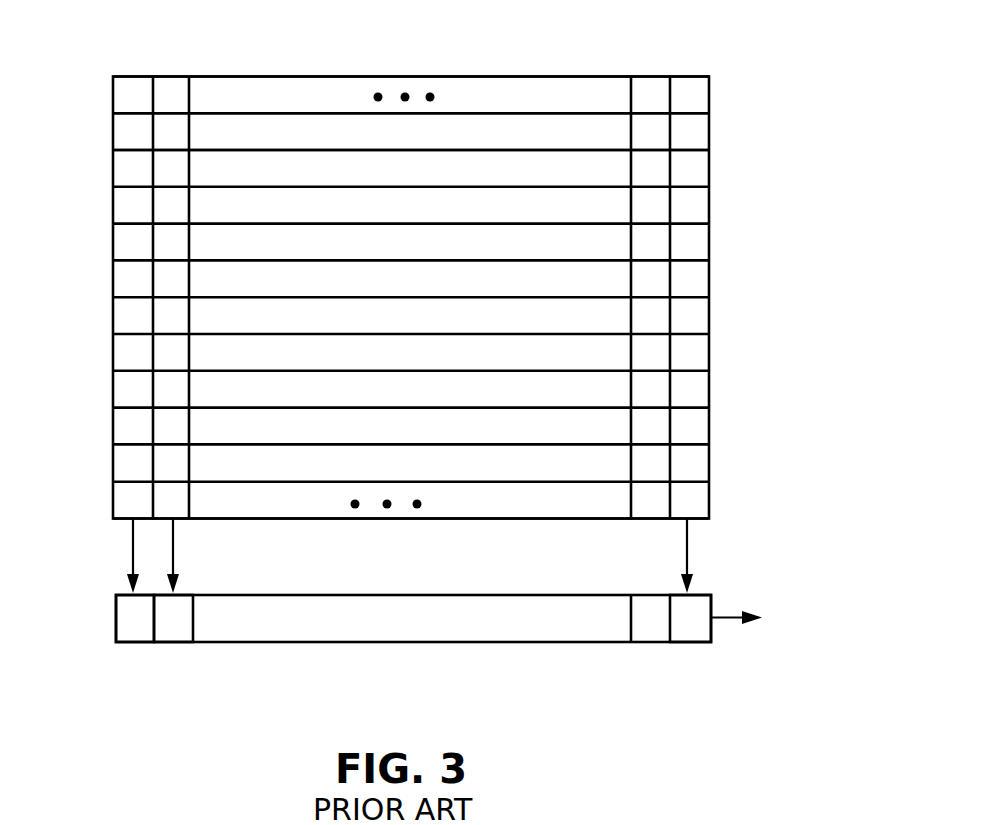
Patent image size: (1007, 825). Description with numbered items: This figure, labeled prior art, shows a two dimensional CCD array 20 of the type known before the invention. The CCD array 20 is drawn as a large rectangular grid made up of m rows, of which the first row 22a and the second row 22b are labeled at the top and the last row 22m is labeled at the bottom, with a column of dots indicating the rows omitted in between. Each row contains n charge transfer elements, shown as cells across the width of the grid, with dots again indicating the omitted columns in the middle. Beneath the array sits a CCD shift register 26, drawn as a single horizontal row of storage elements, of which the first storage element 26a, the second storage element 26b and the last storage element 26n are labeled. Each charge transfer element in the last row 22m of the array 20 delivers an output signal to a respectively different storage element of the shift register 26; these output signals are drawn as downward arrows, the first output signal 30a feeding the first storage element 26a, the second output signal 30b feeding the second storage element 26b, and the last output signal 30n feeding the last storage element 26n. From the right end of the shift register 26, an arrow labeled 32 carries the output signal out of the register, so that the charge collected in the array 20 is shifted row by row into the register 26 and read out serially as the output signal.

The two dimensional CCD array 20 is at (470, 76).
The first row 22a is at (113, 92).
The second row 22b is at (113, 131).
The last row 22m is at (113, 500).
The first output signal 30a is at (133, 550).
The second output signal 30b is at (173, 543).
The last output signal 30n is at (687, 548).
The CCD shift register 26 is at (412, 642).
The first storage element 26a is at (134, 642).
The second storage element 26b is at (180, 642).
The last storage element 26n is at (693, 642).
The output signal line 32 is at (713, 606).